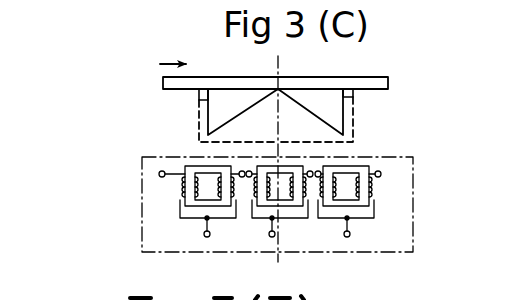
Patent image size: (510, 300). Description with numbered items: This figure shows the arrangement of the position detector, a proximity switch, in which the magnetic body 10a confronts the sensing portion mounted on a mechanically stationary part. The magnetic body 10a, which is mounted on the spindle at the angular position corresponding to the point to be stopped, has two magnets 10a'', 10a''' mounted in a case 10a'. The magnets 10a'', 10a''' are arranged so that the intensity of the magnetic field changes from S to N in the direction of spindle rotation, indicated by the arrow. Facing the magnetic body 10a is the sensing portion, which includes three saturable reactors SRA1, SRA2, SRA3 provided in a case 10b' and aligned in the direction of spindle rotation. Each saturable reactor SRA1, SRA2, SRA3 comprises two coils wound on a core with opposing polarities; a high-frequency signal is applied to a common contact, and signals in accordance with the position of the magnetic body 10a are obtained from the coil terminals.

The magnetic body 10a is at (307, 93).
The case 10a' is at (220, 129).
The magnet 10a'' is at (206, 115).
The magnet 10a''' is at (363, 118).
The case 10b' is at (315, 204).
The saturable reactor SRA1 is at (166, 187).
The saturable reactor SRA2 is at (299, 228).
The saturable reactor SRA3 is at (384, 182).